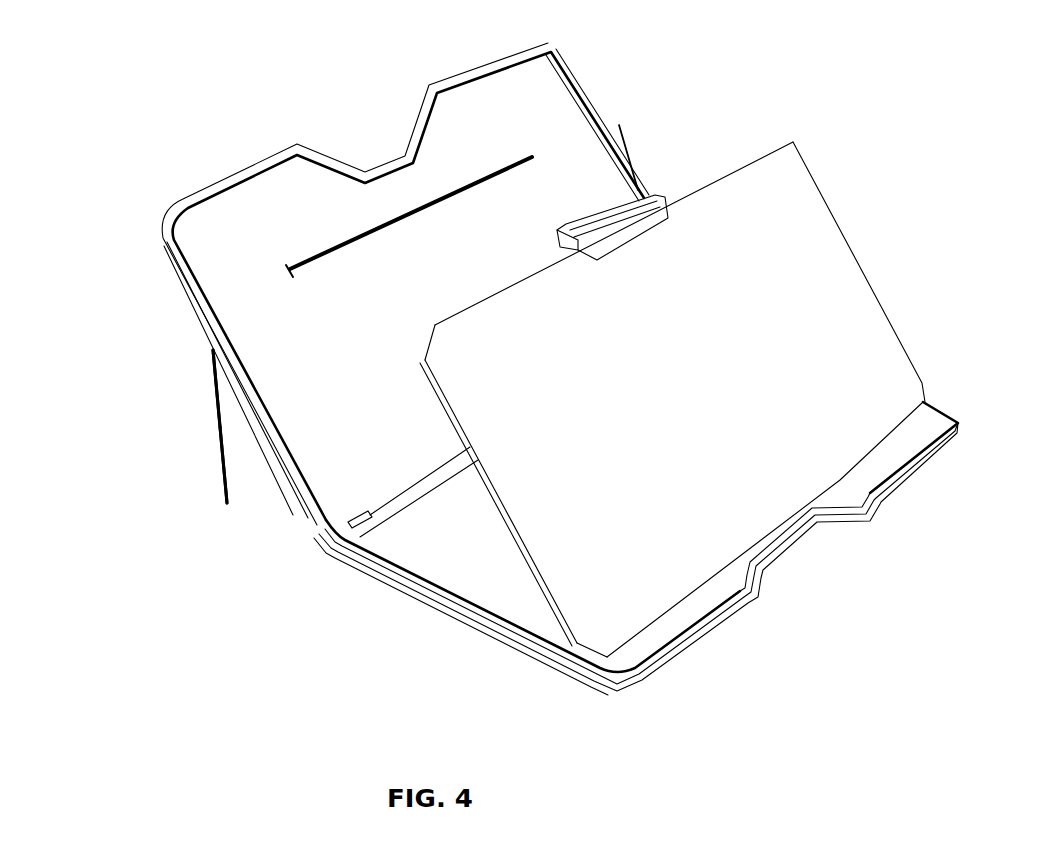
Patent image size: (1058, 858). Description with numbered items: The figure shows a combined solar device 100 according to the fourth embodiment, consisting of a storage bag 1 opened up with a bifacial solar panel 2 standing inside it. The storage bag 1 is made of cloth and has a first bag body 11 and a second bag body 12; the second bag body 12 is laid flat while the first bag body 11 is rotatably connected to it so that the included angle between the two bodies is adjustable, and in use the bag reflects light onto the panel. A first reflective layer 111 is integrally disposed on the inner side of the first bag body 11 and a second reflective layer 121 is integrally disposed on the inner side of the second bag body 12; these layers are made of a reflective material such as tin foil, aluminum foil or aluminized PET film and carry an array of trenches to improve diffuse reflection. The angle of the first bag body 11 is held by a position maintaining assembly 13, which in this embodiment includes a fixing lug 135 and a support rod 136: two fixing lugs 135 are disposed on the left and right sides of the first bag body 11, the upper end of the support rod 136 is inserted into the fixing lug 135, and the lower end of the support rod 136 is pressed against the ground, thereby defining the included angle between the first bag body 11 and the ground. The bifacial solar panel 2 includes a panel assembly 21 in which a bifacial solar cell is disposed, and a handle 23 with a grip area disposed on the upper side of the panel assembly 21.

The combined solar device 100 is at (106, 62).
The storage bag 1 is at (266, 198).
The first bag body 11 is at (303, 514).
The first reflective layer 111 is at (262, 283).
The second bag body 12 is at (480, 622).
The second reflective layer 121 is at (427, 565).
The position maintaining assembly 13 is at (103, 358).
The fixing lug 135 is at (213, 352).
The support rod 136 is at (222, 413).
The bifacial solar panel 2 is at (782, 199).
The panel assembly 21 is at (800, 317).
The handle 23 is at (651, 190).